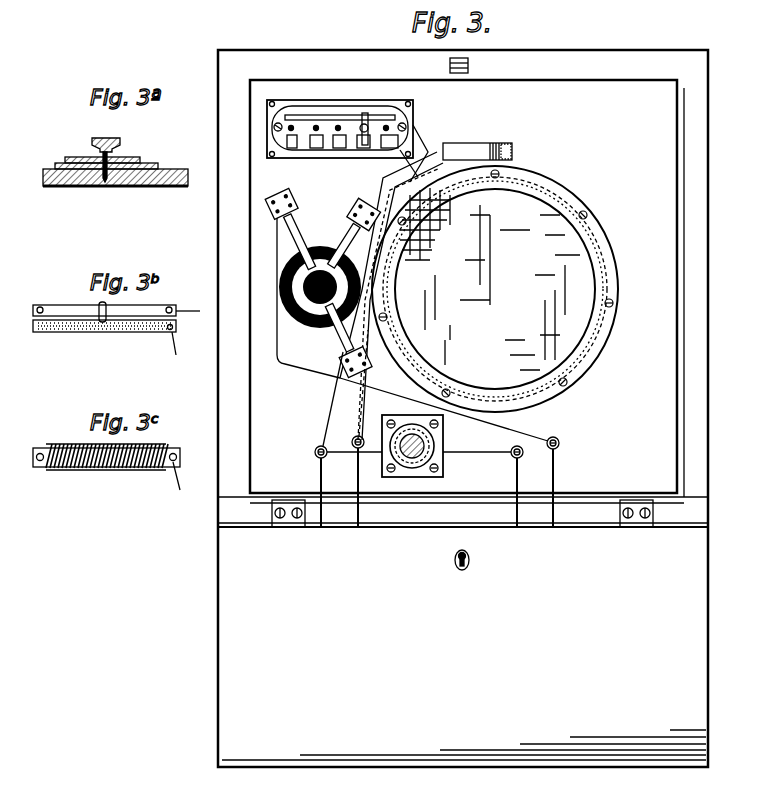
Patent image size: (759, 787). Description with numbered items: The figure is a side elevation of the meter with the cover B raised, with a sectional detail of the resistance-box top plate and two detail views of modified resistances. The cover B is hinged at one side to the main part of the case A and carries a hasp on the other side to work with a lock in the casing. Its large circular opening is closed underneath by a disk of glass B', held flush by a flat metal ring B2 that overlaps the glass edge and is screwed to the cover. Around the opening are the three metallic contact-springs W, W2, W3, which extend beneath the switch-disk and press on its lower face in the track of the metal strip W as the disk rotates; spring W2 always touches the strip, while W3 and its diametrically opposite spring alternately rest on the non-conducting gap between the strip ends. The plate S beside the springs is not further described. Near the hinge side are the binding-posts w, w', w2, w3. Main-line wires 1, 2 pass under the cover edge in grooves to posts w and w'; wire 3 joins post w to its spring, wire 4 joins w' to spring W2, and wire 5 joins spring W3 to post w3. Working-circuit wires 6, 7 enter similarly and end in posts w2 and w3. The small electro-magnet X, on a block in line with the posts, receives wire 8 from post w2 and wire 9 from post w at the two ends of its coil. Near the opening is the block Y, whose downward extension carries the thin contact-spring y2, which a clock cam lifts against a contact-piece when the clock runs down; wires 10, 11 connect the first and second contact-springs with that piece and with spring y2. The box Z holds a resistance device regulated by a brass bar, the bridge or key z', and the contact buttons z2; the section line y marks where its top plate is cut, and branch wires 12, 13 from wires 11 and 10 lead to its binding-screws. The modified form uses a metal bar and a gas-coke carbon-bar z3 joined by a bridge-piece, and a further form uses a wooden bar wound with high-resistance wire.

In FIG. 3, the casing A is at (463, 408).
In FIG. 3, the cover B is at (467, 288).
In FIG. 3, the disk of glass B' is at (495, 288).
In FIG. 3, the flat metal ring B2 is at (612, 305).
In FIG. 3, the plate S is at (308, 296).
In FIG. 3, the metal strip W is at (325, 312).
In FIG. 3, the contact-spring W2 is at (350, 234).
In FIG. 3, the contact-spring W3 is at (294, 230).
In FIG. 3, the binding-post w is at (315, 486).
In FIG. 3, the binding-post w' is at (352, 479).
In FIG. 3, the binding-post w2 is at (510, 481).
In FIG. 3, the binding-post w3 is at (561, 482).
In FIG. 3, the electro-magnet X is at (412, 455).
In FIG. 3, the block Y is at (477, 141).
In FIG. 3, the section line y is at (359, 133).
In FIG. 3, the contact-spring y2 is at (490, 143).
In FIG. 3, the resistance-box Z is at (330, 108).
In FIG. 3A, the resistance-box Z is at (66, 168).
In FIG. 3B, the resistance-box Z is at (76, 309).
In FIG. 3, the bridge or key z' is at (337, 129).
In FIG. 3A, the bridge or key z' is at (106, 159).
In FIG. 3A, the contact plates or buttons z2 is at (145, 162).
In FIG. 3B, the carbon-bar z3 is at (82, 332).
In FIG. 3, the main-line wire 1 is at (317, 469).
In FIG. 3, the main-line wire 2 is at (355, 469).
In FIG. 3, the wire 3 is at (329, 399).
In FIG. 3, the wire 4 is at (359, 383).
In FIG. 3, the wire 5 is at (444, 409).
In FIG. 3, the working-circuit wire 6 is at (512, 469).
In FIG. 3, the working-circuit wire 7 is at (550, 469).
In FIG. 3, the wire 8 is at (477, 446).
In FIG. 3, the wire 9 is at (354, 452).
In FIG. 3, the wire 10 is at (391, 296).
In FIG. 3, the wire 11 is at (392, 178).
In FIG. 3, the branch wire 12 is at (426, 152).
In FIG. 3, the branch wire 13 is at (409, 164).